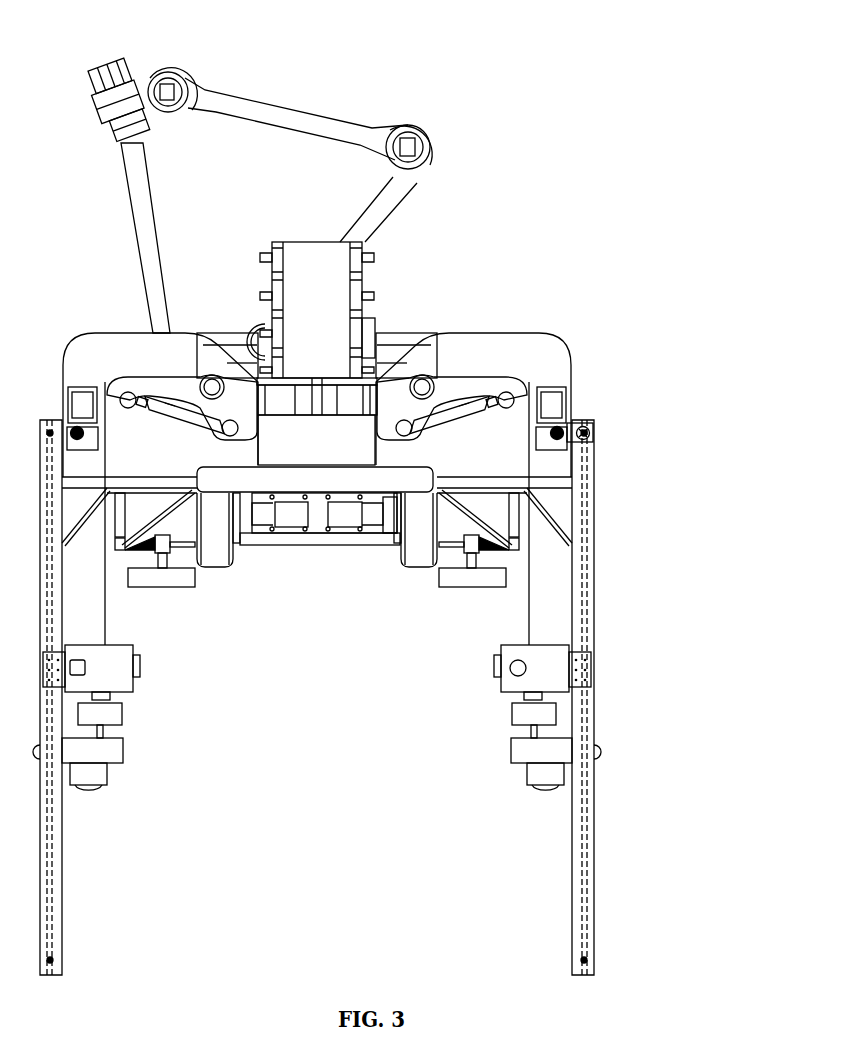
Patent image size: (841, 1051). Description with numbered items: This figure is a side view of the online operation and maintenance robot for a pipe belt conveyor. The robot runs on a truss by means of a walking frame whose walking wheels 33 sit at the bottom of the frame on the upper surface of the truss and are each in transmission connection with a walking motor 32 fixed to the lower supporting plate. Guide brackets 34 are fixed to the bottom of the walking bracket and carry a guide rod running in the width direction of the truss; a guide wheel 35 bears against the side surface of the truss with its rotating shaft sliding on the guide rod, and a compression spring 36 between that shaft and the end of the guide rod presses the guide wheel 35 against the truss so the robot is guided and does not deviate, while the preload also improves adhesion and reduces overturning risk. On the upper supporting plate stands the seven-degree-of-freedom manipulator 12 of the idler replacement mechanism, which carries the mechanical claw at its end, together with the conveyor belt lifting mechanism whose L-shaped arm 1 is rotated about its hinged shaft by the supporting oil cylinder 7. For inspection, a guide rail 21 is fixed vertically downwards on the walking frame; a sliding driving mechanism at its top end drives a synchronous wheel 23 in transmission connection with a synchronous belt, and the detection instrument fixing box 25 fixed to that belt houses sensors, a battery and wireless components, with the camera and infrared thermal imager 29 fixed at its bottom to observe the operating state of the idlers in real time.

The L-shaped arm 1 is at (548, 353).
The supporting oil cylinder 7 is at (497, 403).
The seven-degree-of-freedom manipulator 12 is at (275, 118).
The guide rail 21 is at (585, 473).
The synchronous wheel 23 is at (593, 430).
The detection instrument fixing box 25 is at (550, 672).
The camera and infrared thermal imager 29 is at (547, 717).
The walking motor 32 is at (277, 527).
The walking wheel 33 is at (217, 545).
The guide bracket 34 is at (518, 522).
The guide wheel 35 is at (448, 577).
The compression spring 36 is at (498, 550).